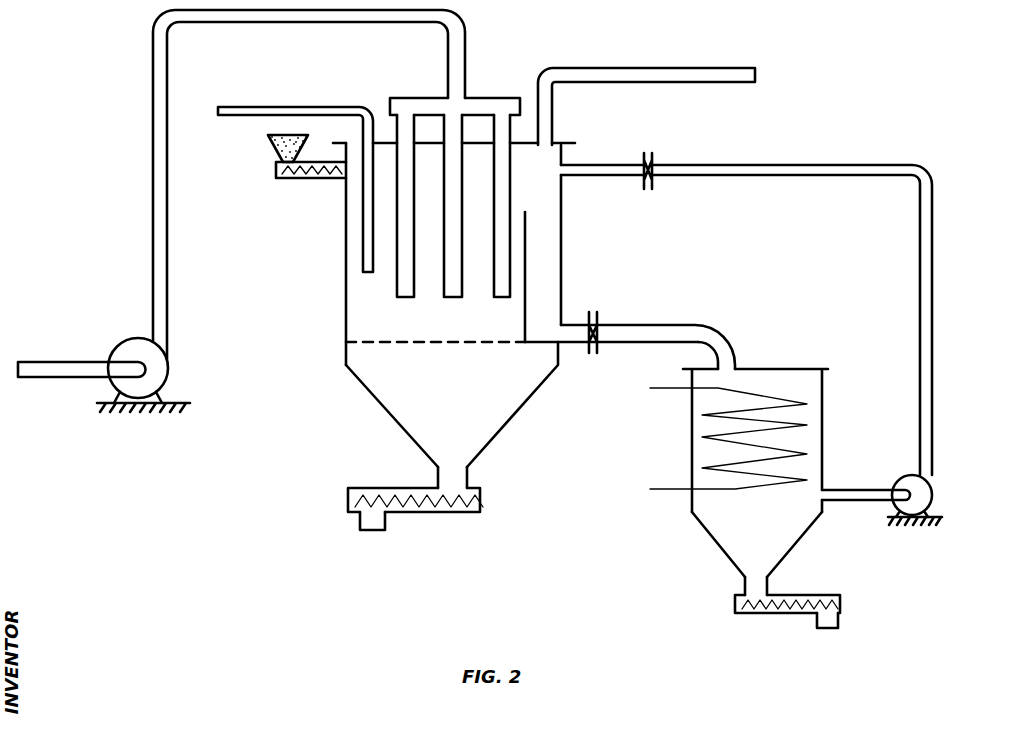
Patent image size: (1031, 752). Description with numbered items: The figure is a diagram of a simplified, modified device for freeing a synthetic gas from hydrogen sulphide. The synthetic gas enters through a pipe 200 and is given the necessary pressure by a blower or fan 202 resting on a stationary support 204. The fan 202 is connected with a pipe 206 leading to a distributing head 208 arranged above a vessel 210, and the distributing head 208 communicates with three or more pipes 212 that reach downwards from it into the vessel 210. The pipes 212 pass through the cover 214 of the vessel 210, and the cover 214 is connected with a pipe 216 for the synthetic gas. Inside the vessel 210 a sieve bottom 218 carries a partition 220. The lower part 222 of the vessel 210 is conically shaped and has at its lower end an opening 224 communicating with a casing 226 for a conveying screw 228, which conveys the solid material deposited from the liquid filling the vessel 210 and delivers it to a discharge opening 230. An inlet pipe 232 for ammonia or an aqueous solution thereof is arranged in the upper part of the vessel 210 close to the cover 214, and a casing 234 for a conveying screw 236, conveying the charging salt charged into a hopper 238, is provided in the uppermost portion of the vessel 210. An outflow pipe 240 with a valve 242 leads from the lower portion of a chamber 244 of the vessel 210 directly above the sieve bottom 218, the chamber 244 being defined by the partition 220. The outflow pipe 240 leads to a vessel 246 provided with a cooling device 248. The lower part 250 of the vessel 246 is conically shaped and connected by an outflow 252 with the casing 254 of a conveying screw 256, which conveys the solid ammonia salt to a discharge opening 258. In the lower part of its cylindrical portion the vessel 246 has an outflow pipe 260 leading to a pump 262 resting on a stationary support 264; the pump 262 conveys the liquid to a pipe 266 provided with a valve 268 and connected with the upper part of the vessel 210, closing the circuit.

The pipe 200 is at (90, 365).
The blower or fan 202 is at (170, 372).
The stationary support 204 is at (150, 411).
The pipe 206 is at (152, 213).
The distributing head 208 is at (497, 98).
The vessel 210 is at (562, 243).
The pipes 212 is at (454, 297).
The cover 214 is at (498, 146).
The pipe 216 is at (666, 67).
The sieve bottom 218 is at (488, 347).
The partition 220 is at (525, 224).
The lower part 222 is at (396, 404).
The opening 224 is at (468, 481).
The casing 226 is at (476, 506).
The conveying screw 228 is at (432, 508).
The discharge opening 230 is at (375, 526).
The inlet pipe 232 is at (326, 106).
The casing 234 is at (318, 179).
The conveying screw 236 is at (276, 168).
The hopper 238 is at (270, 141).
The outflow pipe 240 is at (706, 317).
The valve 242 is at (590, 352).
The chamber 244 is at (561, 277).
The vessel 246 is at (822, 380).
The cooling device 248 is at (740, 489).
The lower part 250 is at (709, 538).
The outflow 252 is at (766, 588).
The casing 254 is at (765, 613).
The conveying screw 256 is at (840, 604).
The discharge opening 258 is at (830, 620).
The outflow pipe 260 is at (872, 502).
The pump 262 is at (930, 508).
The stationary support 264 is at (914, 524).
The pipe 266 is at (932, 315).
The valve 268 is at (654, 159).